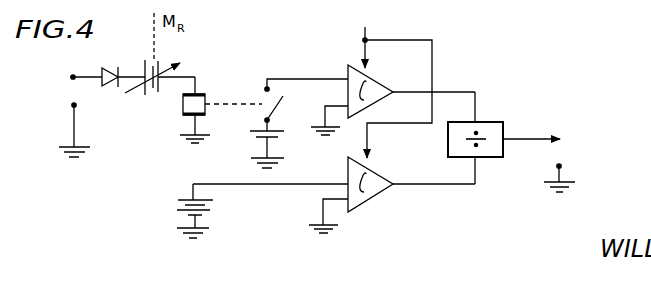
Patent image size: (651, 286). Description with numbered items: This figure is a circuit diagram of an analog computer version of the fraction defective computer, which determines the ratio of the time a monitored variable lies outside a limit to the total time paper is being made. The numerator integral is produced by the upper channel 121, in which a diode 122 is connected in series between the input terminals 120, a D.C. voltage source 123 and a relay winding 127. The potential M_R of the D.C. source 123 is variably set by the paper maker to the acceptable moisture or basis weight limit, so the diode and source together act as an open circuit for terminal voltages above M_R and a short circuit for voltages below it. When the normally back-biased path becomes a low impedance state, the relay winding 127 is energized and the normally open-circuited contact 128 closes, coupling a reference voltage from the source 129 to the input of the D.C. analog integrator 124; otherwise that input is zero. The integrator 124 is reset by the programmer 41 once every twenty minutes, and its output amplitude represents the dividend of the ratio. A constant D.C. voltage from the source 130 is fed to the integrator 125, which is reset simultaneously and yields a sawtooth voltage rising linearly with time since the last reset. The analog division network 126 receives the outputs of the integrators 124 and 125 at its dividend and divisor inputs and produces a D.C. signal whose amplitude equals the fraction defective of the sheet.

The programmer 41 is at (473, 24).
The input terminals 120 is at (75, 96).
The upper channel 121 is at (315, 53).
The diode 122 is at (103, 70).
The D.C. voltage source 123 is at (144, 60).
The D.C. analog integrator 124 is at (375, 78).
The integrator 125 is at (373, 196).
The analog division network 126 is at (448, 143).
The relay winding 127 is at (183, 106).
The normally open-circuited contact 128 is at (282, 98).
The reference voltage source 129 is at (257, 146).
The constant D.C. voltage source 130 is at (211, 213).